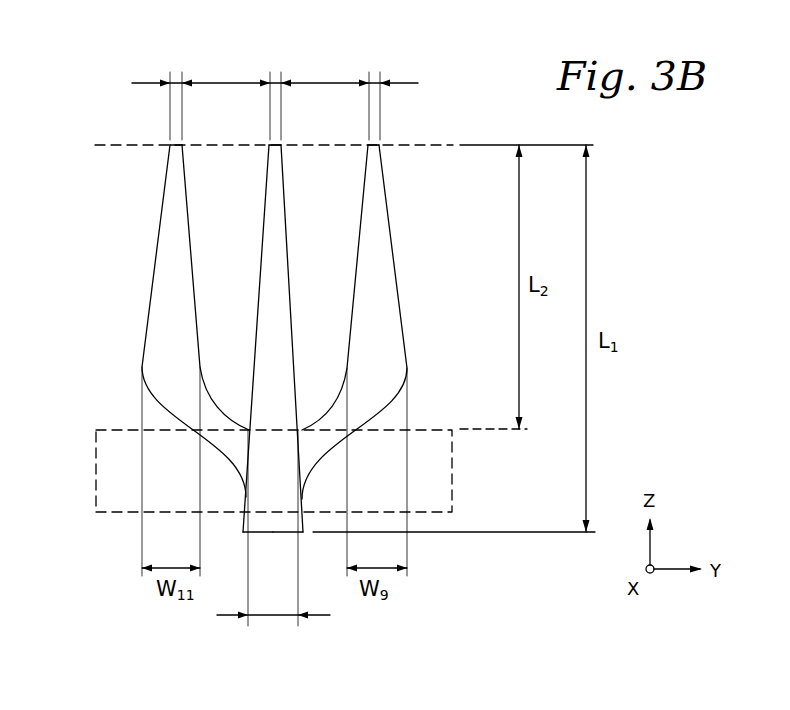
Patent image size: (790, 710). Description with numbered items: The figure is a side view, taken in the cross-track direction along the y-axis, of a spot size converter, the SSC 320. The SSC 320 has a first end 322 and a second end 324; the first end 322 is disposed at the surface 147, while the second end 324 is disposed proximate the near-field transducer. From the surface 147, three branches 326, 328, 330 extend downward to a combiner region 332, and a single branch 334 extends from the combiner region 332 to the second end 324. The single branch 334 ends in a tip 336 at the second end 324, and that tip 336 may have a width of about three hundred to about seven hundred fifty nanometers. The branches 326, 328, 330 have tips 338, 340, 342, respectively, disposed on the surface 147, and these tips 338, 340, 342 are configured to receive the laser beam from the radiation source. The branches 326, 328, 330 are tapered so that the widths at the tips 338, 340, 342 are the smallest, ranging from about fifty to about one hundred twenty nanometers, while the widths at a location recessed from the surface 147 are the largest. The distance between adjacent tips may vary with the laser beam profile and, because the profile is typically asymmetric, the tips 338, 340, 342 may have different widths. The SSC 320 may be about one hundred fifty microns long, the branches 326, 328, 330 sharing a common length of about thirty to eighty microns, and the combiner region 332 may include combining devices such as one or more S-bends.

The surface 147 is at (436, 126).
The spot size converter (SSC) 320 is at (235, 349).
The first end 322 is at (194, 32).
The second end 324 is at (341, 609).
The branch 326 is at (381, 301).
The branch 328 is at (276, 349).
The branch 330 is at (167, 300).
The combiner region 332 is at (96, 462).
The single branch 334 is at (243, 530).
The tip 336 is at (303, 533).
The tip 338 is at (371, 140).
The tip 340 is at (273, 140).
The tip 342 is at (173, 140).